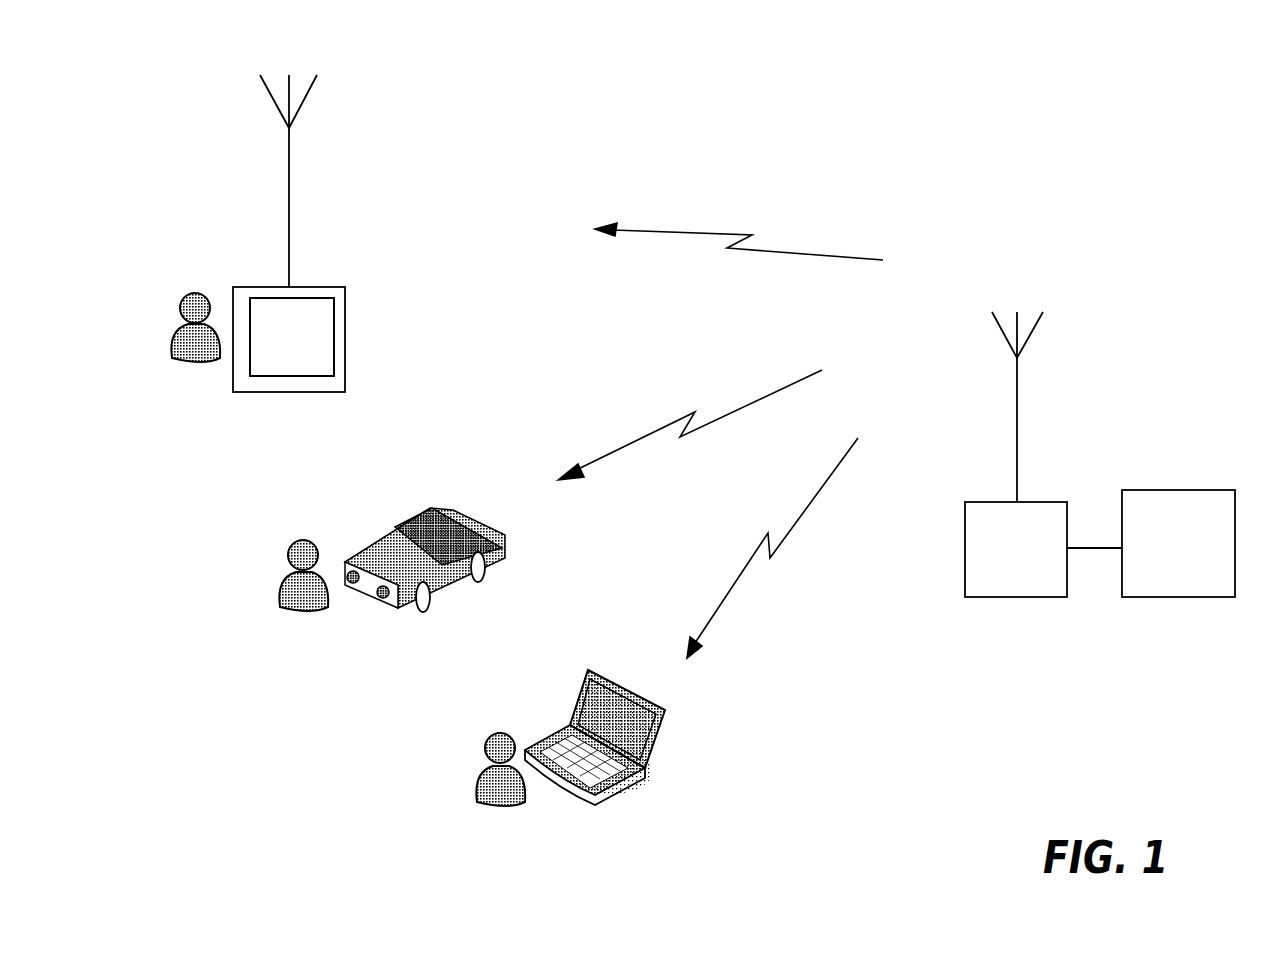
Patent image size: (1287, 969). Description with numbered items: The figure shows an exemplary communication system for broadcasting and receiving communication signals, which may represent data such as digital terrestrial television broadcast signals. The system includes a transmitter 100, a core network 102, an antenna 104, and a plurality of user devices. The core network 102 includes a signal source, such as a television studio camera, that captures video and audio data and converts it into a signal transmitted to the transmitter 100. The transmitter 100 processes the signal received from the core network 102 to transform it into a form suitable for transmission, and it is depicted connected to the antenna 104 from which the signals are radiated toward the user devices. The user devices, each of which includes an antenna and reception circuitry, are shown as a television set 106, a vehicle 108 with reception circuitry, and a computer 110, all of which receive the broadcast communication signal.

The transmitter 100 is at (983, 597).
The core network 102 is at (1193, 597).
The antenna 104 is at (1018, 375).
The television set 106 is at (260, 392).
The vehicle 108 is at (392, 607).
The computer 110 is at (593, 798).